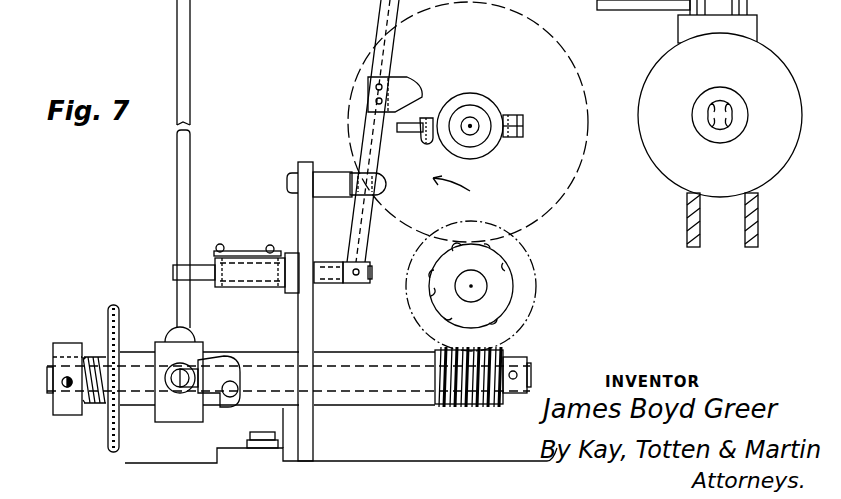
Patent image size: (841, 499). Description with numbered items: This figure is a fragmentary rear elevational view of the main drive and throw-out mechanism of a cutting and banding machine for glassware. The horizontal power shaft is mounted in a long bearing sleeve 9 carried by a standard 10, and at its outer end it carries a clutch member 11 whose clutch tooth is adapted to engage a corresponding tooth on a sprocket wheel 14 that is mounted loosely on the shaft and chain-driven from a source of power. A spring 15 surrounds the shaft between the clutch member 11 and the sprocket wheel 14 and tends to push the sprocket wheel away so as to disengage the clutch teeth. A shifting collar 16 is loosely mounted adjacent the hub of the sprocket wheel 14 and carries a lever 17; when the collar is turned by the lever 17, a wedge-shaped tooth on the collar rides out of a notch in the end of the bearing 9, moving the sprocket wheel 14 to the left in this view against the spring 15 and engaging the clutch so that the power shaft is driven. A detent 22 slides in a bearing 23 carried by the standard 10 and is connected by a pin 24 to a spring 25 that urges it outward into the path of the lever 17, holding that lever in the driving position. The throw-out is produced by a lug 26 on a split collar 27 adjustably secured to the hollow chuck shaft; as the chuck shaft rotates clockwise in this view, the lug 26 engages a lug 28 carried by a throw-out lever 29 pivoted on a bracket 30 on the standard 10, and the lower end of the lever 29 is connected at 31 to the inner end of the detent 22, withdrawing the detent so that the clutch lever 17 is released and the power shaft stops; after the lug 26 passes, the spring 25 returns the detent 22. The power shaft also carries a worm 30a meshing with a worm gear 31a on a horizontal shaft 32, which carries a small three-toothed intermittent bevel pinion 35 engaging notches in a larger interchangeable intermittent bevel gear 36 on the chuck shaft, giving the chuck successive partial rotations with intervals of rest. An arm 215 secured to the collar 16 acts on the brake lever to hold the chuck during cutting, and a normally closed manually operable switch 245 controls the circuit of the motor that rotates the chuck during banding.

The bearing sleeve 9 is at (387, 407).
The standard 10 is at (313, 321).
The clutch member 11 is at (70, 343).
The sprocket wheel 14 is at (117, 308).
The spring 15 is at (92, 405).
The shifting collar 16 is at (170, 423).
The clutch-shifting lever 17 is at (190, 71).
The detent 22 is at (206, 282).
The bearing 23 is at (250, 288).
The pin 24 is at (223, 246).
The spring 25 is at (257, 247).
The lug 26 is at (405, 135).
The split collar 27 is at (478, 94).
The lug 28 is at (413, 80).
The throw-out lever 29 is at (381, 12).
The bracket 30 is at (328, 173).
The worm 30a is at (503, 349).
The connection 31 is at (340, 287).
The worm gear 31a is at (526, 321).
The horizontal shaft 32 is at (478, 288).
The intermittent bevel pinion 35 is at (500, 272).
The intermittent bevel gear 36 is at (568, 193).
The arm 215 is at (230, 368).
The manually operable switch 245 is at (727, 106).